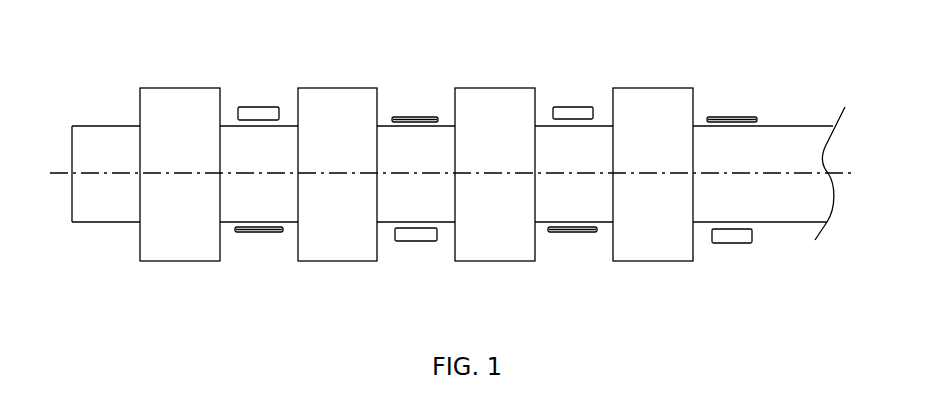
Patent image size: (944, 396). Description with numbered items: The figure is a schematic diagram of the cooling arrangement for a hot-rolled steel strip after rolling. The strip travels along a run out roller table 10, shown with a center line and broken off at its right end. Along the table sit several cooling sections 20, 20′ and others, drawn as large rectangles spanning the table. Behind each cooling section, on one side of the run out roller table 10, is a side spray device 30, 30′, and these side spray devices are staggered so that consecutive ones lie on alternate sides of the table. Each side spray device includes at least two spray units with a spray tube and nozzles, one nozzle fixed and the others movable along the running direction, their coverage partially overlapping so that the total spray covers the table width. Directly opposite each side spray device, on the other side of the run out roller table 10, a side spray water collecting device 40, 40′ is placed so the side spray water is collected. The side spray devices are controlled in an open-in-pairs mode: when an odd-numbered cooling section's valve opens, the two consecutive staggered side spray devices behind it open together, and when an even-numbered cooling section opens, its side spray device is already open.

The run out roller table 10 is at (100, 150).
The cooling section 20 is at (168, 108).
The cooling section 20′ is at (332, 107).
The side spray device 30 is at (257, 108).
The side spray device 30′ is at (410, 242).
The side spray water collecting device 40 is at (260, 235).
The side spray water collecting device 40′ is at (423, 117).